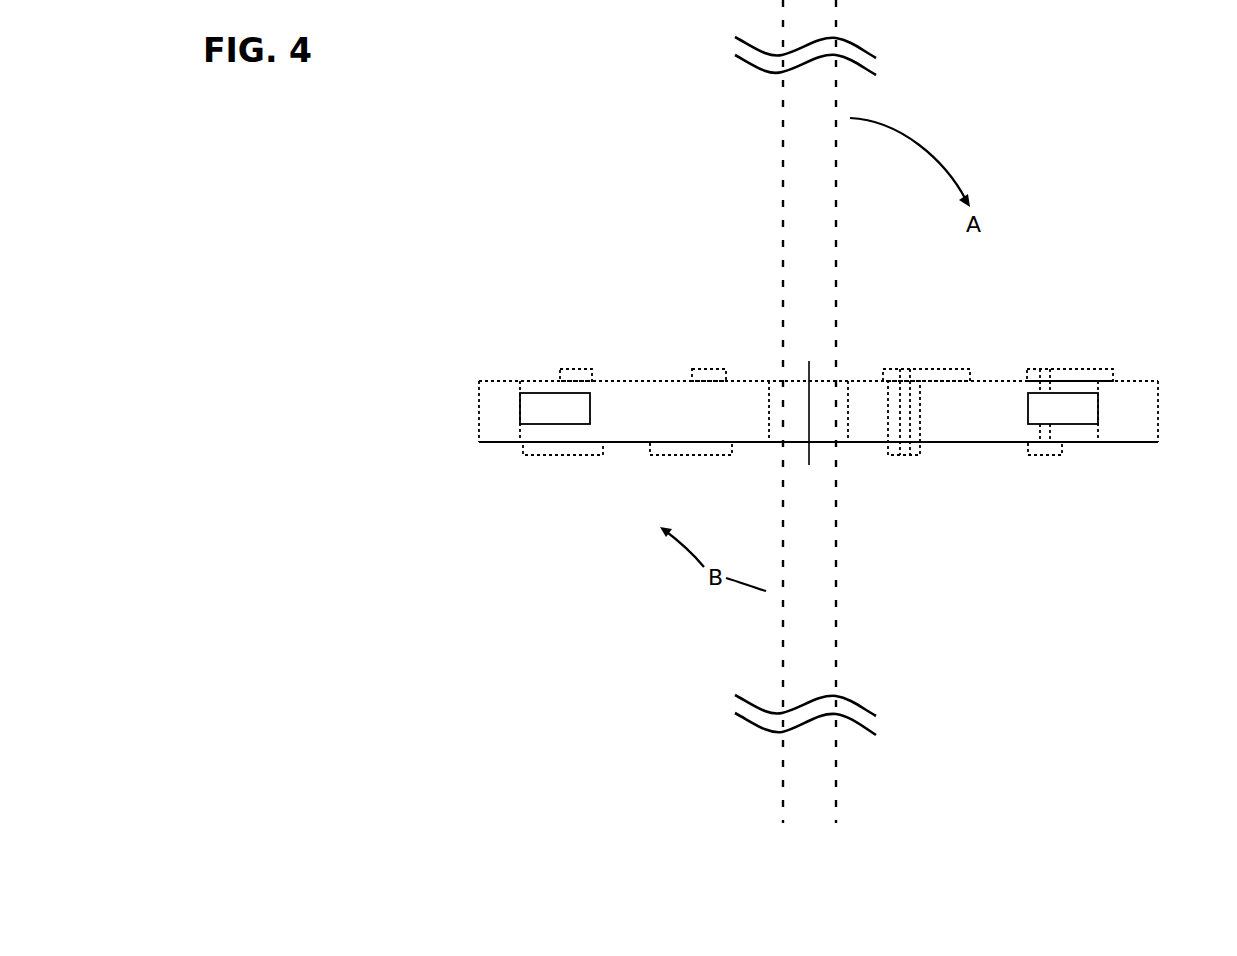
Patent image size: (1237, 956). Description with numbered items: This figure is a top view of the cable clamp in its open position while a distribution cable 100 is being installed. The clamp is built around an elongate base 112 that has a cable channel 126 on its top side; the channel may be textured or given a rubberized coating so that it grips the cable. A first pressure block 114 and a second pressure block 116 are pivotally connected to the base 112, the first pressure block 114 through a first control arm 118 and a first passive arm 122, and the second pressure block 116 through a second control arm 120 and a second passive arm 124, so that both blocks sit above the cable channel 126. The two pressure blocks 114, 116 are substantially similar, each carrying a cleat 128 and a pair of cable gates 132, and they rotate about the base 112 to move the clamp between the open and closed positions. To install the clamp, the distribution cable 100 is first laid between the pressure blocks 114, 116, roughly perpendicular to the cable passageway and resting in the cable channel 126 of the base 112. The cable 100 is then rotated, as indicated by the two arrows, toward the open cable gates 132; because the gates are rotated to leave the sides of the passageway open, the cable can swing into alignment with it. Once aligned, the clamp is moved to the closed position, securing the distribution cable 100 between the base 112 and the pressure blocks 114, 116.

The distribution cable 100 is at (808, 267).
The elongate base 112 is at (487, 440).
The first pressure block 114 is at (638, 403).
The second pressure block 116 is at (996, 402).
The first control arm 118 is at (707, 375).
The second control arm 120 is at (905, 452).
The first passive arm 122 is at (574, 375).
The second passive arm 124 is at (1050, 452).
The cable channel 126 is at (831, 404).
The cleat 128 is at (540, 412).
The cable gates 132 is at (560, 455).